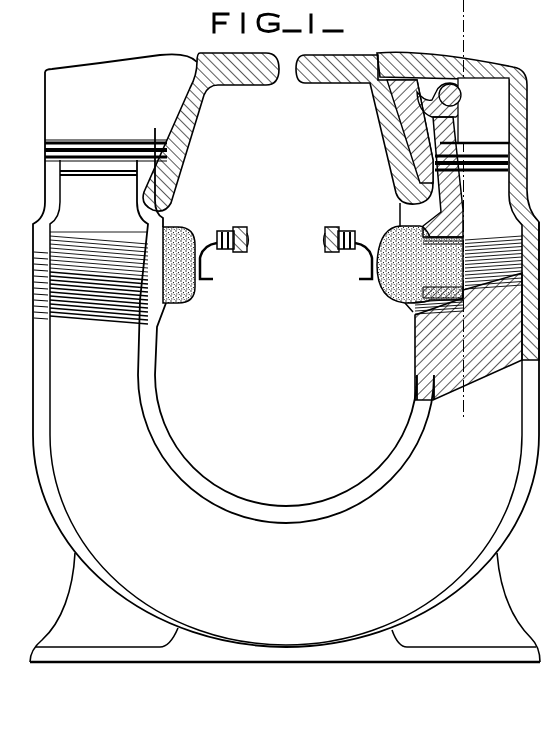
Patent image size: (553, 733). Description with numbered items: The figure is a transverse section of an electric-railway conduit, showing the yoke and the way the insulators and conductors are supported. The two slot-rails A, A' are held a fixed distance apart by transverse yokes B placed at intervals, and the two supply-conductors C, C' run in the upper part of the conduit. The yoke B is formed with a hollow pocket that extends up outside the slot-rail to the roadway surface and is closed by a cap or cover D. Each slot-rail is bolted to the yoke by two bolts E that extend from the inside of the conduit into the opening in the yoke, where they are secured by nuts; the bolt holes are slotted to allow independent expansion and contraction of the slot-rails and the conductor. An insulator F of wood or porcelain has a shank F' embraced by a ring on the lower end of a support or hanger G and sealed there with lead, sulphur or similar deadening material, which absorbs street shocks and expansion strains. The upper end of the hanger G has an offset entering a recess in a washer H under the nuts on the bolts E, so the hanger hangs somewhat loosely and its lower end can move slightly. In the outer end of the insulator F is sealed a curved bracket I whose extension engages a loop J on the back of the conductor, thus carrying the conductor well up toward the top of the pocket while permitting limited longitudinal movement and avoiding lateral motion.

The slot-rail A is at (211, 132).
The slot-rail A' is at (364, 129).
The transverse yoke B is at (285, 358).
The supply-conductor C is at (247, 222).
The supply-conductor C' is at (325, 224).
The cap or cover D is at (478, 68).
The bolt E is at (459, 96).
The insulator F is at (276, 277).
The shank of insulator F' is at (449, 258).
The support or hanger G is at (462, 200).
The washer H is at (421, 88).
The curved bracket I is at (207, 255).
The loop J is at (223, 234).